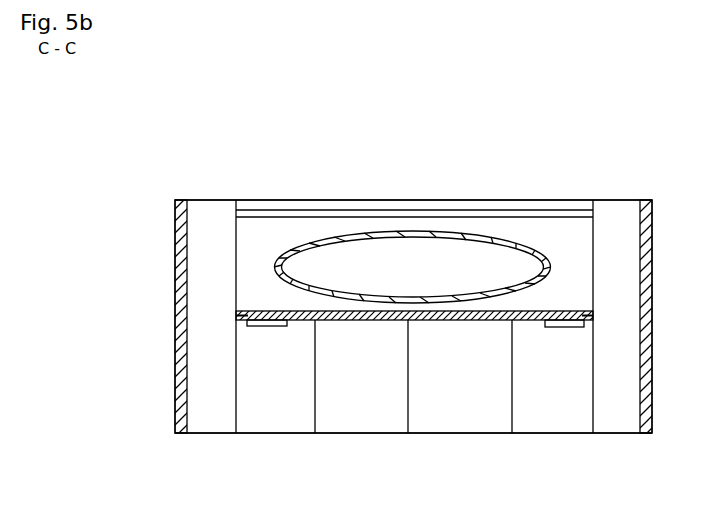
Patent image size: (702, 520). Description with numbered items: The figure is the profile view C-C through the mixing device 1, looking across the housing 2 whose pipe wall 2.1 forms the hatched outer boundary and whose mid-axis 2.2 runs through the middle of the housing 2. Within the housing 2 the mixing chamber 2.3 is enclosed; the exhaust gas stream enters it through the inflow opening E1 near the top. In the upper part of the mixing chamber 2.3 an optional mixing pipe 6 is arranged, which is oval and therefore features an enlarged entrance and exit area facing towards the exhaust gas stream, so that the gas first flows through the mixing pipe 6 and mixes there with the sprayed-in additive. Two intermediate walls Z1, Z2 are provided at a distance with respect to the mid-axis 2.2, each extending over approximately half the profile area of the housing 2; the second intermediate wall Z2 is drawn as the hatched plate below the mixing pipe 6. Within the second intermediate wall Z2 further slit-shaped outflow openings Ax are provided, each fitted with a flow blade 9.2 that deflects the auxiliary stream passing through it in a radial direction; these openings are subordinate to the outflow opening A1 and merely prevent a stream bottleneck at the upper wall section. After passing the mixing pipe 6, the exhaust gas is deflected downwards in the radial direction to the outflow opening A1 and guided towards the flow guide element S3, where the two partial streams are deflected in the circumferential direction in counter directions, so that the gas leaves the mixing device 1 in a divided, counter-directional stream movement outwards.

The mixing device 1 is at (204, 113).
The housing 2 is at (481, 111).
The pipe wall 2.1 is at (183, 198).
The mid-axis 2.2 is at (430, 147).
The mixing chamber 2.3 is at (419, 272).
The mixing pipe 6 is at (325, 241).
The inflow opening E1 is at (399, 215).
The first intermediate wall Z1 is at (537, 215).
The second intermediate wall Z2 is at (536, 318).
The further outflow openings Ax is at (248, 311).
The flow blade 9.2 is at (282, 328).
The outflow opening A1 is at (270, 386).
The flow guide element S3 is at (440, 412).